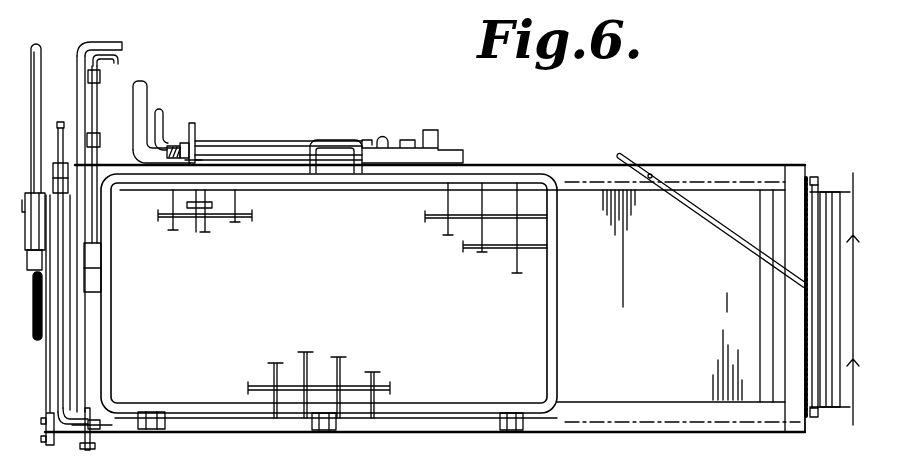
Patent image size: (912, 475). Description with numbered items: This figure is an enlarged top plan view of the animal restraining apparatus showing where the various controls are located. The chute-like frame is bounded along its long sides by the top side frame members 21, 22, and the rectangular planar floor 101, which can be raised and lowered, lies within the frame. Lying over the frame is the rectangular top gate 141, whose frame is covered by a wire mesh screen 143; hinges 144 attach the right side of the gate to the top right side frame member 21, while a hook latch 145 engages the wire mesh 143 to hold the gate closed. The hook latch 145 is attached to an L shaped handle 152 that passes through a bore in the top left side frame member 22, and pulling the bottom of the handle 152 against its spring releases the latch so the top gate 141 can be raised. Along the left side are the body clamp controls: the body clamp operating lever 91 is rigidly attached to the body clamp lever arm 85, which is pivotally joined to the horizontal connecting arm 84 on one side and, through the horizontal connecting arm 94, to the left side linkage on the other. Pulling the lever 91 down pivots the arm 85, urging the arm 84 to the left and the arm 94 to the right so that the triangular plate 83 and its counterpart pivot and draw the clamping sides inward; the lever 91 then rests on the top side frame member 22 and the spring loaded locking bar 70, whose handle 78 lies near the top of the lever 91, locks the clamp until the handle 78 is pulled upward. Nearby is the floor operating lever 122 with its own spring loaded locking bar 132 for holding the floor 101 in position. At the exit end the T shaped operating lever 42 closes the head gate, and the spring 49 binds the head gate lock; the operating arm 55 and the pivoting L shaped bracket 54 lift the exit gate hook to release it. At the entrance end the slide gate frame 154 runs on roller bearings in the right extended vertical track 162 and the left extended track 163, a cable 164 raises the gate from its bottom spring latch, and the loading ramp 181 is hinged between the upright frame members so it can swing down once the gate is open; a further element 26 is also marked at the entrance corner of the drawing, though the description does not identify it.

The top side frame member 21 is at (613, 431).
The top side frame member 22 is at (573, 173).
The roller 26 is at (828, 412).
The operating lever 42 is at (38, 44).
The spring 49 is at (40, 333).
The L shaped bracket 54 is at (52, 446).
The operating arm 55 is at (60, 122).
The spring loaded locking bar 70 is at (93, 119).
The handle 78 is at (124, 60).
The triangular plate 83 is at (87, 452).
The horizontal connecting arm 84 is at (86, 328).
The body clamp lever arm 85 is at (96, 291).
The body clamp operating lever 91 is at (119, 42).
The horizontal connecting arm 94 is at (98, 218).
The floor 101 is at (628, 362).
The floor operating lever 122 is at (143, 83).
The spring loaded locking bar 132 is at (163, 111).
The top gate 141 is at (435, 431).
The wire mesh screen 143 is at (514, 262).
The hinges 144 is at (160, 431).
The hook latch 145 is at (196, 222).
The L shaped handle 152 is at (194, 125).
The frame 154 is at (802, 208).
The right extended vertical track 162 is at (805, 426).
The left extended track 163 is at (805, 168).
The cable 164 is at (709, 227).
The loading ramp 181 is at (841, 189).